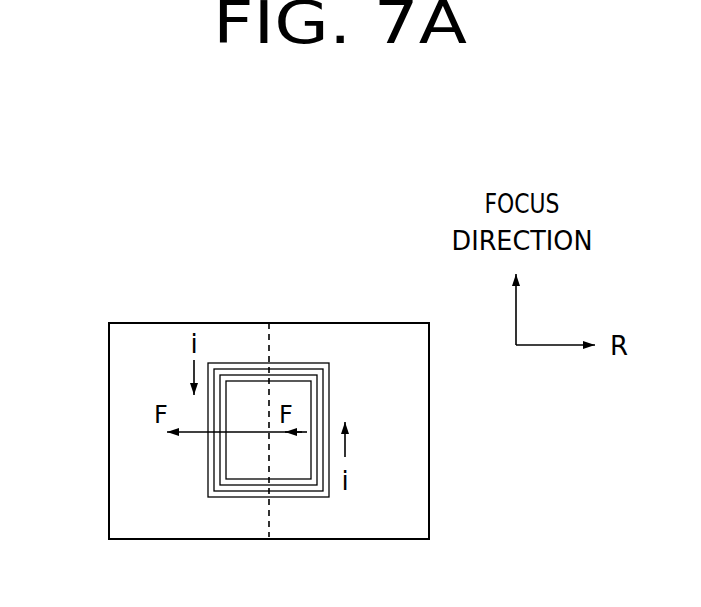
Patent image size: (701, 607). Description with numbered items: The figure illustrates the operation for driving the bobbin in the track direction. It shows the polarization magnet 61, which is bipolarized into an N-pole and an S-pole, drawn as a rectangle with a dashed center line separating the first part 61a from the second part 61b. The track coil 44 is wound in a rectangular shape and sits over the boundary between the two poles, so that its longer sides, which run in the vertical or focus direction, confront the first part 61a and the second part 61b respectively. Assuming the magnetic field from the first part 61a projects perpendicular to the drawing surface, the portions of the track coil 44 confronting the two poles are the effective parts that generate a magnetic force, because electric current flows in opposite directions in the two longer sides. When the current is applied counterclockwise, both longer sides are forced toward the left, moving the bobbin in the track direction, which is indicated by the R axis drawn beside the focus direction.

The polarization magnet 61 is at (268, 369).
The first part 61a is at (420, 402).
The second part 61b is at (120, 380).
The track coil 44 is at (242, 488).